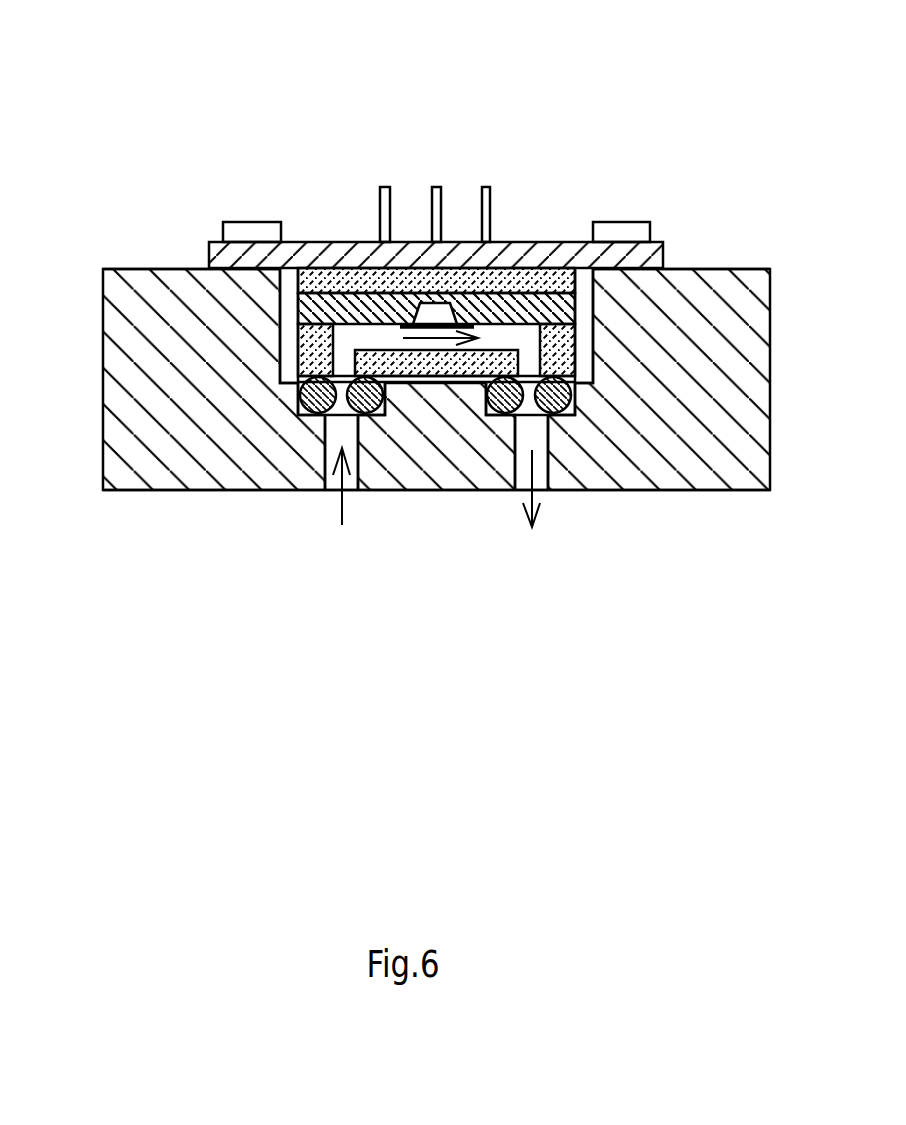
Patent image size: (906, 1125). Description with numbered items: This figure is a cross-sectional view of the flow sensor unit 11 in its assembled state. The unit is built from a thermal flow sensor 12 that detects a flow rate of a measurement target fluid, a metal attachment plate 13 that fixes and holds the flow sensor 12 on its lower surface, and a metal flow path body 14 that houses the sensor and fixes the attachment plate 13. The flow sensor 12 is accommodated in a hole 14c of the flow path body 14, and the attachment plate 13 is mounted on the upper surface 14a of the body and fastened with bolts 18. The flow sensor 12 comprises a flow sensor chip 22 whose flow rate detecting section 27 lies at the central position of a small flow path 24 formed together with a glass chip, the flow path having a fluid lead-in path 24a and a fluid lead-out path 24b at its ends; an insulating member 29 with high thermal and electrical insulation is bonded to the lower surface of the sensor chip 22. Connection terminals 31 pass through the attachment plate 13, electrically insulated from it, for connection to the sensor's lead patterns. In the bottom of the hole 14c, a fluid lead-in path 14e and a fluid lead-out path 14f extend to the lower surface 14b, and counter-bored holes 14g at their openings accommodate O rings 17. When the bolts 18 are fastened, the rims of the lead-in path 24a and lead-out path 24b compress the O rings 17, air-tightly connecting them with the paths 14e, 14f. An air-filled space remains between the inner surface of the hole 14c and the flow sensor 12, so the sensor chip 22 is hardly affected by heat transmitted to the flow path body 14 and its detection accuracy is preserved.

The flow sensor unit 11 is at (207, 112).
The thermal flow sensor 12 is at (592, 338).
The attachment plate 13 is at (512, 262).
The flow path body 14 is at (102, 440).
The upper surface 14a is at (137, 267).
The lower surface 14b is at (123, 495).
The hole 14c is at (290, 343).
The fluid lead-in path 14e is at (336, 462).
The fluid lead-out path 14f is at (522, 478).
The holes 14g is at (305, 415).
The O rings 17 is at (298, 394).
The bolts 18 is at (243, 232).
The flow sensor chip 22 is at (413, 300).
The flow path 24 is at (365, 337).
The fluid lead-in path 24a is at (343, 343).
The fluid lead-out path 24b is at (530, 353).
The flow rate detecting section 27 is at (443, 329).
The insulating member 29 is at (452, 306).
The connection terminals 31 is at (385, 187).